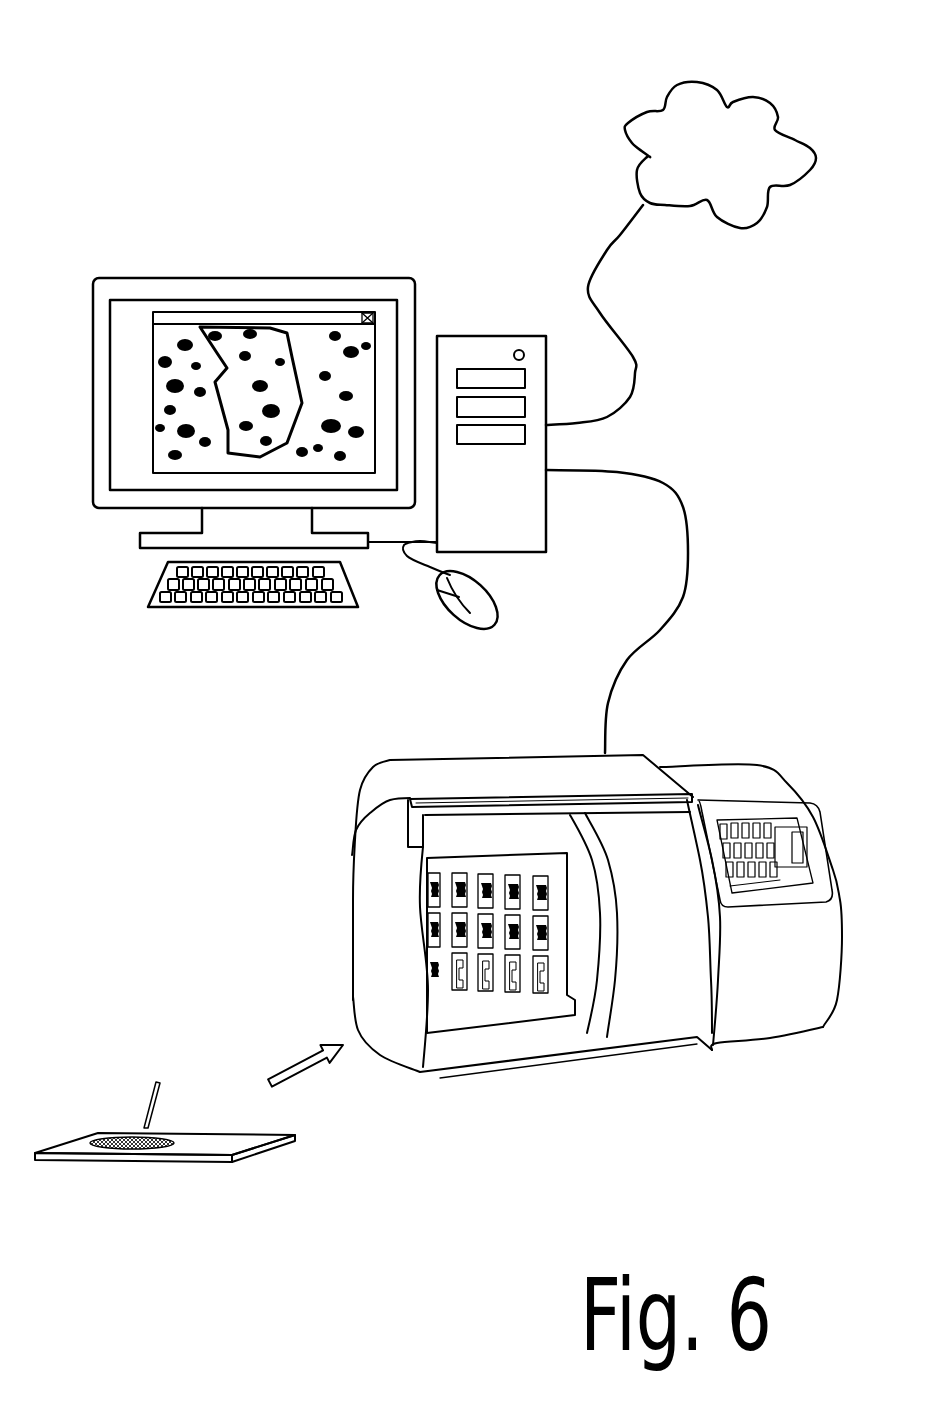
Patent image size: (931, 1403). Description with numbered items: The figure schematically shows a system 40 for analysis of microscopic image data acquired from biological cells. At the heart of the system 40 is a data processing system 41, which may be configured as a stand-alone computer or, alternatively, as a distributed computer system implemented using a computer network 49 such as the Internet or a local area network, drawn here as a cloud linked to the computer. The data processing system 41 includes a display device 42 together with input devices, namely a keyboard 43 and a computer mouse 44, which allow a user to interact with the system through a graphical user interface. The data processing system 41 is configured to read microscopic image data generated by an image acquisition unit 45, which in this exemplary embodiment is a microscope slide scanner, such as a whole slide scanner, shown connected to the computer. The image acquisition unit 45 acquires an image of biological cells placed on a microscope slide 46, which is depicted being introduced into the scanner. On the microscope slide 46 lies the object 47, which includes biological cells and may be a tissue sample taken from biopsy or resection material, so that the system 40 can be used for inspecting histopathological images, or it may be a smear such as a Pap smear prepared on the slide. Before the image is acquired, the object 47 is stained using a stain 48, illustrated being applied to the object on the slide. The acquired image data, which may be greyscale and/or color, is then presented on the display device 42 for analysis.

The system 40 is at (412, 62).
The data processing system 41 is at (311, 215).
The display device 42 is at (248, 278).
The keyboard 43 is at (155, 579).
The computer mouse 44 is at (443, 617).
The image acquisition unit 45 is at (689, 748).
The microscope slide 46 is at (190, 1140).
The object 47 is at (136, 1148).
The stain 48 is at (148, 1130).
The computer network 49 is at (701, 169).